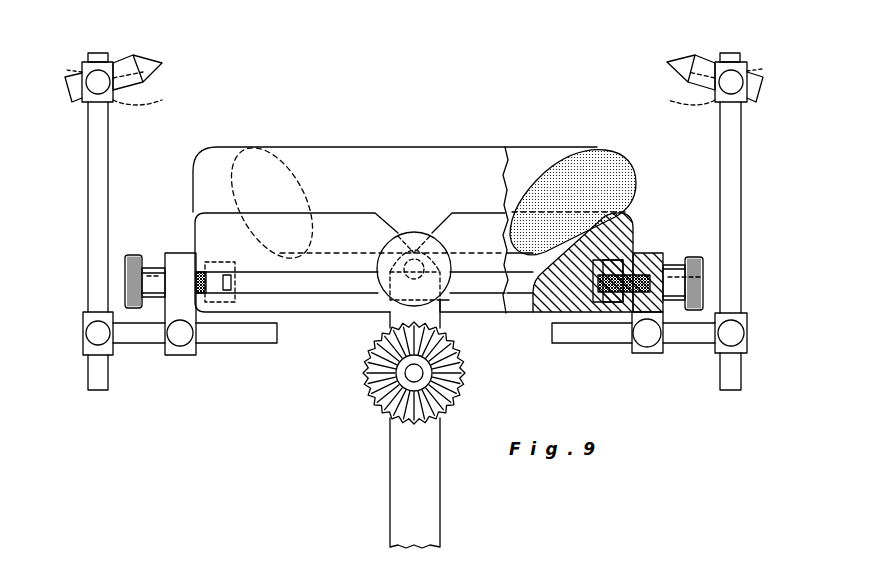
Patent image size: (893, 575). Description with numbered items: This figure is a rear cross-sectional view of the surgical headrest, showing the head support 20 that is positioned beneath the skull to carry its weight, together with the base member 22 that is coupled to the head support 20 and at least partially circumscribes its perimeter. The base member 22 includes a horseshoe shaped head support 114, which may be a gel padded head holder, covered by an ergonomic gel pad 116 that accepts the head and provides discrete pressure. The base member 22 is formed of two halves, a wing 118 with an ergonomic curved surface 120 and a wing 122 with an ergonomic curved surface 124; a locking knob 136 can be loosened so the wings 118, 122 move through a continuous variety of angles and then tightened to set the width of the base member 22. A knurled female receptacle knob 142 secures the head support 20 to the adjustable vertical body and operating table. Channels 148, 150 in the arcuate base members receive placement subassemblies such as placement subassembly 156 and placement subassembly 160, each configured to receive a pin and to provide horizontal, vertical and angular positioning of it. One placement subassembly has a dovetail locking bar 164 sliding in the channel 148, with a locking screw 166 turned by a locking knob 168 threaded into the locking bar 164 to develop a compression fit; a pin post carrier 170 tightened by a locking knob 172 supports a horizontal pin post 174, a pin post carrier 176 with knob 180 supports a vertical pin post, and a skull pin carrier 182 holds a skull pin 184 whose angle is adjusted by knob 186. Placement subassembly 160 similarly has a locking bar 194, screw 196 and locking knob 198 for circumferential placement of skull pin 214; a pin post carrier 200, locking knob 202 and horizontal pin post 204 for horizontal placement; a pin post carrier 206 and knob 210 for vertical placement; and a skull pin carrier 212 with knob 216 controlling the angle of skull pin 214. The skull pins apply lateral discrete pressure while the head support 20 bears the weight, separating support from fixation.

The head support 20 is at (298, 70).
The base member 22 is at (335, 313).
The horseshoe shaped head support 114 is at (632, 210).
The ergonomic gel pad 116 is at (272, 147).
The wing 118 is at (541, 313).
The ergonomic curved surface 120 is at (247, 228).
The wing 122 is at (310, 313).
The ergonomic curved surface 124 is at (570, 222).
The locking knob 136 is at (406, 232).
The knurled female receptacle knob 142 is at (466, 376).
The channel 148 is at (601, 305).
The channel 150 is at (226, 302).
The placement subassembly 156 is at (744, 184).
The placement subassembly 160 is at (85, 184).
The locking bar 164 is at (614, 262).
The locking screw 166 is at (645, 257).
The locking knob 168 is at (703, 280).
The pin post carrier 170 is at (645, 353).
The locking knob 172 is at (652, 338).
The horizontal pin post 174 is at (616, 343).
The pin post carrier 176 is at (747, 348).
The knob 180 is at (740, 330).
The skull pin carrier 182 is at (747, 64).
The skull pin 184 is at (687, 60).
The knob 186 is at (750, 75).
The locking bar 194 is at (207, 262).
The screw 196 is at (197, 270).
The locking knob 198 is at (125, 276).
The pin post carrier 200 is at (190, 355).
The locking knob 202 is at (176, 340).
The horizontal pin post 204 is at (212, 343).
The pin post carrier 206 is at (85, 348).
The knob 210 is at (90, 328).
The skull pin carrier 212 is at (82, 65).
The skull pin 214 is at (143, 58).
The knob 216 is at (82, 75).